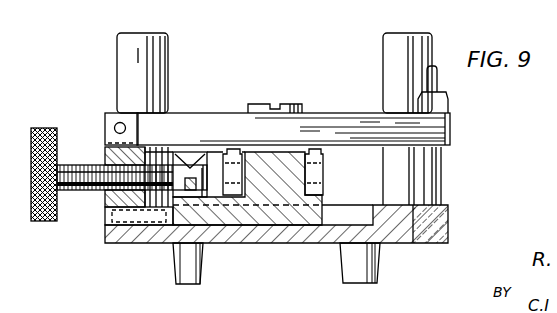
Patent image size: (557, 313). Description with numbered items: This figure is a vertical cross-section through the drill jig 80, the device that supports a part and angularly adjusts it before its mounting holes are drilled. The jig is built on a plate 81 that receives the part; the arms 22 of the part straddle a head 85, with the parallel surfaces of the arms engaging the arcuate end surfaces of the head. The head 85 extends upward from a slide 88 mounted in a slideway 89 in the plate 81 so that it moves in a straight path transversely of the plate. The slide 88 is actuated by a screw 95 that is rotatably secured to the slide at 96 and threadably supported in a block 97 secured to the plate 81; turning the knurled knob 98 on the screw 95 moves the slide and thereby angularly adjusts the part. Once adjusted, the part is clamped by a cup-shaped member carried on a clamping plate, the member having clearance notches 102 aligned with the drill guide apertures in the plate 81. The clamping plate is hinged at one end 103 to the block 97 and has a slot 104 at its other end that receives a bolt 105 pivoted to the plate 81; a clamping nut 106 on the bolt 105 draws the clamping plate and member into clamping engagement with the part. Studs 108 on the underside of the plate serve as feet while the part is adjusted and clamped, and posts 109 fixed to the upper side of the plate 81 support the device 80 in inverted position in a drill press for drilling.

The knurled knob 98 is at (43, 128).
The screw 95 is at (73, 166).
The block 97 is at (104, 149).
The hinged end 103 is at (121, 123).
The posts 109 is at (150, 44).
The clamping nut 106 is at (452, 106).
The clearance notches 102 is at (323, 119).
The slot 104 is at (351, 126).
The head 85 is at (279, 156).
The arms 22 is at (233, 150).
The rotatable securing point 96 is at (200, 152).
The slide 88 is at (265, 220).
The slideway 89 is at (160, 214).
The plate 81 is at (397, 237).
The studs 108 is at (177, 283).
The bolt 105 is at (433, 180).
The drill jig 80 is at (489, 141).